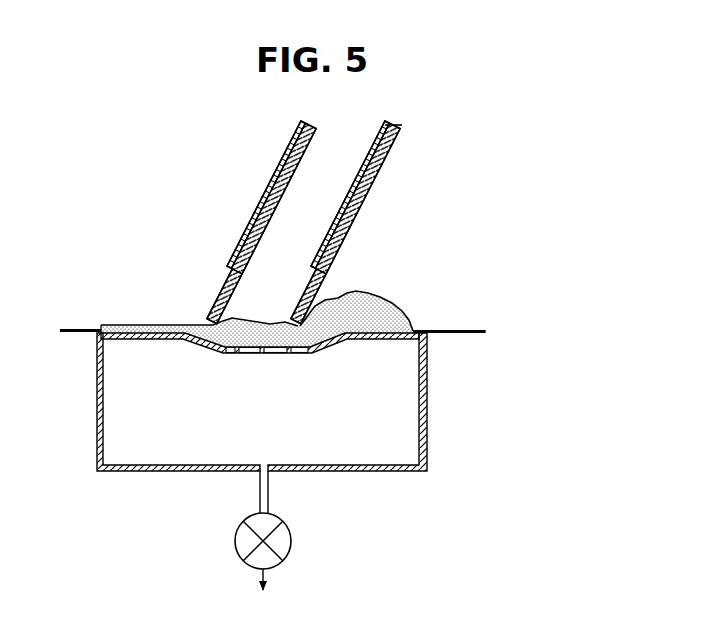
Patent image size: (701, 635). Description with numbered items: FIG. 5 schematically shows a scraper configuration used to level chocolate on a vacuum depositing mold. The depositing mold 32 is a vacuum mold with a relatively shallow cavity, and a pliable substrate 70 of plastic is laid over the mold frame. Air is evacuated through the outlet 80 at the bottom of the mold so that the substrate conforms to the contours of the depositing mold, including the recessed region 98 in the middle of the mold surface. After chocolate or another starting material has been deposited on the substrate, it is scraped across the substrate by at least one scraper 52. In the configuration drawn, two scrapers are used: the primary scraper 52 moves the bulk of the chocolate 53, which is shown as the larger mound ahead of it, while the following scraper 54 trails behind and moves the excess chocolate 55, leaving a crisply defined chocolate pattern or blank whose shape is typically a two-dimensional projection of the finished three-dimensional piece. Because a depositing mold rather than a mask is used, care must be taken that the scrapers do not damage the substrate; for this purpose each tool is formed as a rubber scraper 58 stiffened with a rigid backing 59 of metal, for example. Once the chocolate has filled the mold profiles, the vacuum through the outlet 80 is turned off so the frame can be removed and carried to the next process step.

The depositing mold 32 is at (129, 472).
The primary scraper 52 is at (309, 215).
The bulk of the chocolate 53 is at (378, 295).
The following scraper 54 is at (247, 192).
The excess chocolate 55 is at (230, 320).
The rubber scraper 58 is at (383, 165).
The rigid backing 59 is at (381, 140).
The pliable substrate 70 is at (462, 329).
The outlet 80 is at (292, 536).
The perforated support belt section 98 is at (330, 341).